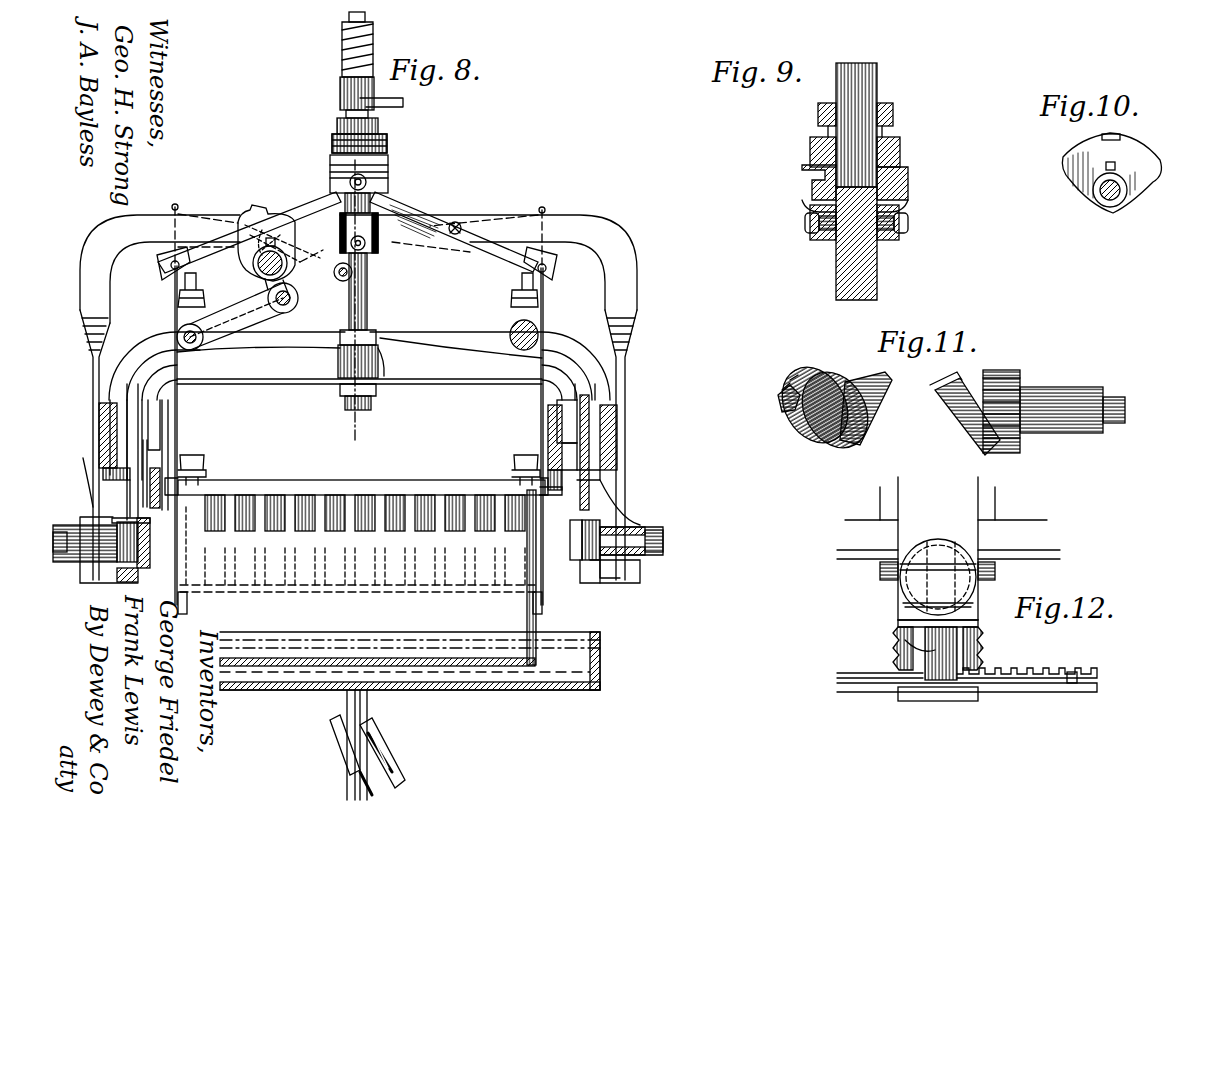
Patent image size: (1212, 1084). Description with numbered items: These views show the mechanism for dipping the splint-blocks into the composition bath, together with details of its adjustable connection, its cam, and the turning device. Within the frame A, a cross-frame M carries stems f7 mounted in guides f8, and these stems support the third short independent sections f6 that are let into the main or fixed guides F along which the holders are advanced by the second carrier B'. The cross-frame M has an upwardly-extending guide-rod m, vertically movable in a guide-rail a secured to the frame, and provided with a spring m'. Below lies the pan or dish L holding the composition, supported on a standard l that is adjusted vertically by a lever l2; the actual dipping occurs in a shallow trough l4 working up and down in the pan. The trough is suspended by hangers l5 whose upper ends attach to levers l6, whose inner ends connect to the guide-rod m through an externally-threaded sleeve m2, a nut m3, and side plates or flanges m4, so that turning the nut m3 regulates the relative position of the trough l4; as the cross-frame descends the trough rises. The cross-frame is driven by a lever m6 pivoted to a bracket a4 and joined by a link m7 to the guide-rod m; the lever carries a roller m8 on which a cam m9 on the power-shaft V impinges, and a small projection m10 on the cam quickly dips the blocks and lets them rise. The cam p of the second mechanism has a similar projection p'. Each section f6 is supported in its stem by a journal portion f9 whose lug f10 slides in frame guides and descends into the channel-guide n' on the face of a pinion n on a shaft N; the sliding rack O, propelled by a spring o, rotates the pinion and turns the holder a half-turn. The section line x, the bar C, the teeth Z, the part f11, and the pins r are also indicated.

In FIG. 8, the frame A is at (97, 443).
In FIG. 8, the guide-rail a is at (394, 98).
In FIG. 8, the bracket a4 is at (145, 340).
In FIG. 8, the cross-frame M is at (428, 372).
In FIG. 8, the section line x is at (358, 297).
In FIG. 8, the spring m' is at (340, 44).
In FIG. 8, the guide-rod m is at (362, 243).
In FIG. 9, the guide-rod m is at (868, 181).
In FIG. 8, the externally-threaded sleeve m2 is at (380, 126).
In FIG. 9, the externally-threaded sleeve m2 is at (893, 110).
In FIG. 8, the nut m3 is at (388, 146).
In FIG. 9, the nut m3 is at (900, 150).
In FIG. 8, the side plates or flanges m4 is at (388, 166).
In FIG. 9, the side plates or flanges m4 is at (910, 190).
In FIG. 8, the lever m6 is at (225, 336).
In FIG. 9, the lever m6 is at (910, 222).
In FIG. 8, the link m7 is at (370, 265).
In FIG. 8, the roller m8 is at (284, 313).
In FIG. 8, the cam m9 is at (253, 266).
In FIG. 8, the projection m10 is at (262, 205).
In FIG. 8, the power-shaft V is at (264, 286).
In FIG. 8, the standard l is at (368, 708).
In FIG. 8, the lever l2 is at (390, 765).
In FIG. 8, the shallow trough l4 is at (432, 592).
In FIG. 8, the hangers l5 is at (545, 315).
In FIG. 8, the levers l6 is at (305, 212).
In FIG. 9, the levers l6 is at (820, 242).
In FIG. 8, the second carrier B' is at (359, 379).
In FIG. 8, the comb bar C is at (288, 488).
In FIG. 8, the comb teeth Z is at (365, 565).
In FIG. 8, the pan or dish L is at (478, 690).
In FIG. 8, the shaft N is at (80, 565).
In FIG. 11, the shaft N is at (1103, 400).
In FIG. 12, the shaft N is at (950, 640).
In FIG. 8, the pinion n is at (362, 530).
In FIG. 11, the pinion n is at (1001, 402).
In FIG. 12, the pinion n is at (926, 648).
In FIG. 8, the channel-guide n' is at (359, 543).
In FIG. 11, the channel-guide n' is at (960, 412).
In FIG. 12, the channel-guide n' is at (907, 656).
In FIG. 8, the propelling-spring o is at (134, 578).
In FIG. 12, the sliding rack O is at (998, 680).
In FIG. 12, the main or fixed guides F is at (864, 558).
In FIG. 8, the third short independent sections f6 is at (535, 502).
In FIG. 11, the third short independent sections f6 is at (782, 408).
In FIG. 12, the third short independent sections f6 is at (898, 603).
In FIG. 8, the stems f7 is at (175, 448).
In FIG. 12, the stems f7 is at (953, 522).
In FIG. 8, the guides f8 is at (160, 420).
In FIG. 12, the guides f8 is at (882, 578).
In FIG. 8, the journal portion f9 is at (556, 498).
In FIG. 11, the journal portion f9 is at (840, 372).
In FIG. 8, the lug f10 is at (612, 484).
In FIG. 11, the lug f10 is at (878, 430).
In FIG. 8, the bracket f11 is at (141, 523).
In FIG. 10, the cam p is at (1121, 188).
In FIG. 10, the projection p' is at (1128, 127).
In FIG. 10, the pins r is at (1093, 208).